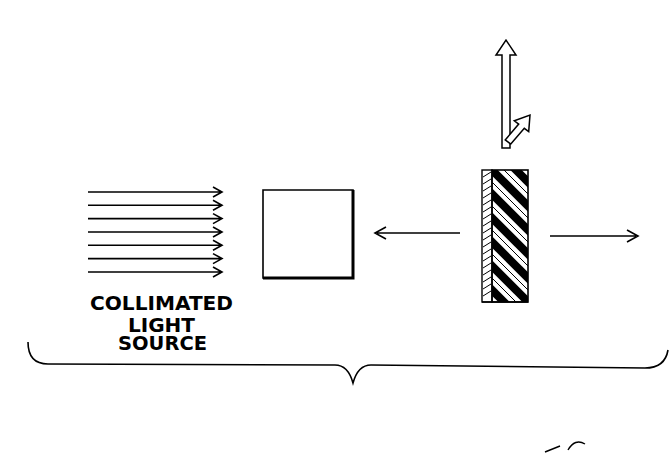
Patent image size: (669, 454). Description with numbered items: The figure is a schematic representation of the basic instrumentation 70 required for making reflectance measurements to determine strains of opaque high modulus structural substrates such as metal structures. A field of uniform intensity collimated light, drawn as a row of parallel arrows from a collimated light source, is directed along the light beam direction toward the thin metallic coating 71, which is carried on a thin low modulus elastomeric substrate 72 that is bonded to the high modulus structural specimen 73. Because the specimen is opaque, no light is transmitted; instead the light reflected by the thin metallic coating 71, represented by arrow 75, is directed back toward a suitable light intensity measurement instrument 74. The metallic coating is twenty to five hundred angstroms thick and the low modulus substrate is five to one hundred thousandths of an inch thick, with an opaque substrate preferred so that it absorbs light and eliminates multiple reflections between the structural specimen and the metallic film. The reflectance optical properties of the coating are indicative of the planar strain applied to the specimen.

The basic instrumentation for making reflectance measurements 70 is at (392, 152).
The thin metallic coating 71 is at (483, 172).
The thin low modulus elastomeric substrate 72 is at (488, 302).
The high modulus structural specimen 73 is at (530, 193).
The light intensity measurement instrument 74 is at (322, 246).
The arrow representing reflected light 75 is at (430, 233).